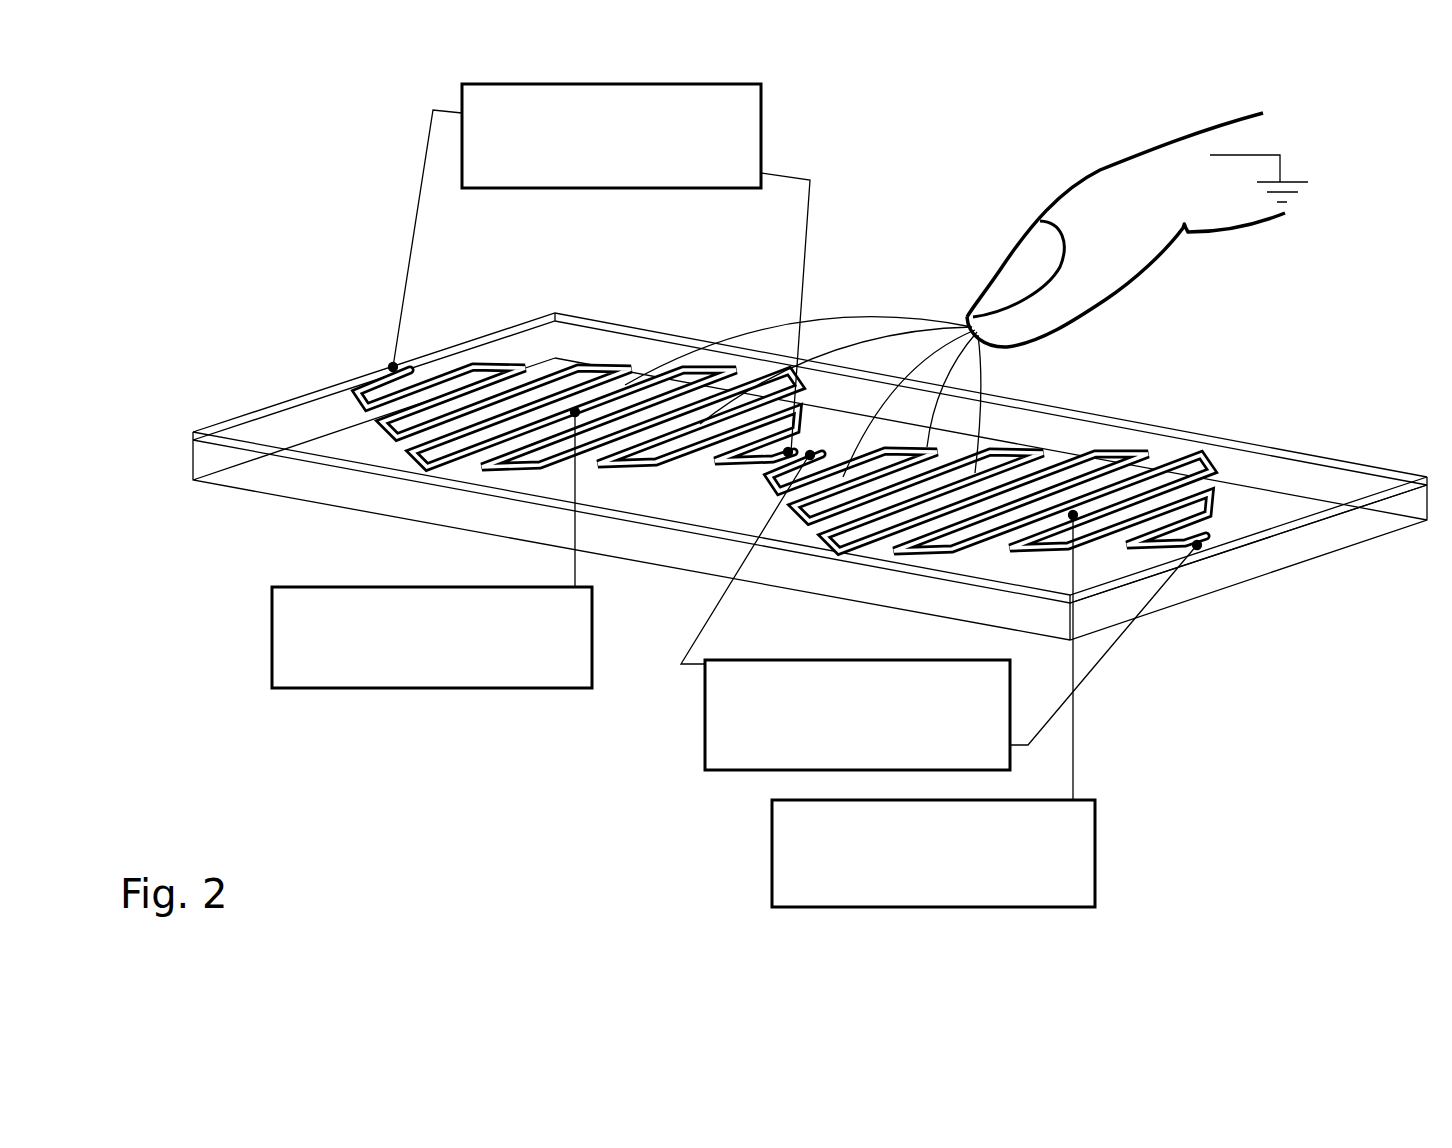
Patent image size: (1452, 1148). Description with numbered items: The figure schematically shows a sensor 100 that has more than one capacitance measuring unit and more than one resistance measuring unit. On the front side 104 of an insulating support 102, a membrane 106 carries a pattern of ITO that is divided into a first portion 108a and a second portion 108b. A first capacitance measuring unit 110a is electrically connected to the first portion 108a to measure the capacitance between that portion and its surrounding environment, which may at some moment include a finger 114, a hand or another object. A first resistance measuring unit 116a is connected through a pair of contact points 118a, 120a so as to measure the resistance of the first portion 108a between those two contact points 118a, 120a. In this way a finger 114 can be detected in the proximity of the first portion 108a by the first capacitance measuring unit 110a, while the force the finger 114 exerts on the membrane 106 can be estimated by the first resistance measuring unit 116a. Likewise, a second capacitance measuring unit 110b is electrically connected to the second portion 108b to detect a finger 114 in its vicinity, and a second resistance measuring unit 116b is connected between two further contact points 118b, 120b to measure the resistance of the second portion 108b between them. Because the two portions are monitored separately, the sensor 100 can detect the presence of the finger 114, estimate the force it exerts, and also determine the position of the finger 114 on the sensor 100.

The sensor 100 is at (286, 227).
The insulating support 102 is at (1172, 592).
The front side 104 is at (315, 463).
The membrane 106 is at (1300, 552).
The first portion 108a is at (608, 318).
The second portion 108b is at (1210, 443).
The first capacitance measuring unit 110a is at (455, 688).
The second capacitance measuring unit 110b is at (1095, 860).
The finger 114 is at (1150, 272).
The first resistance measuring unit 116a is at (761, 113).
The second resistance measuring unit 116b is at (762, 770).
The contact point 118a is at (393, 367).
The contact point 118b is at (810, 455).
The contact point 120a is at (788, 452).
The contact point 120b is at (1197, 545).